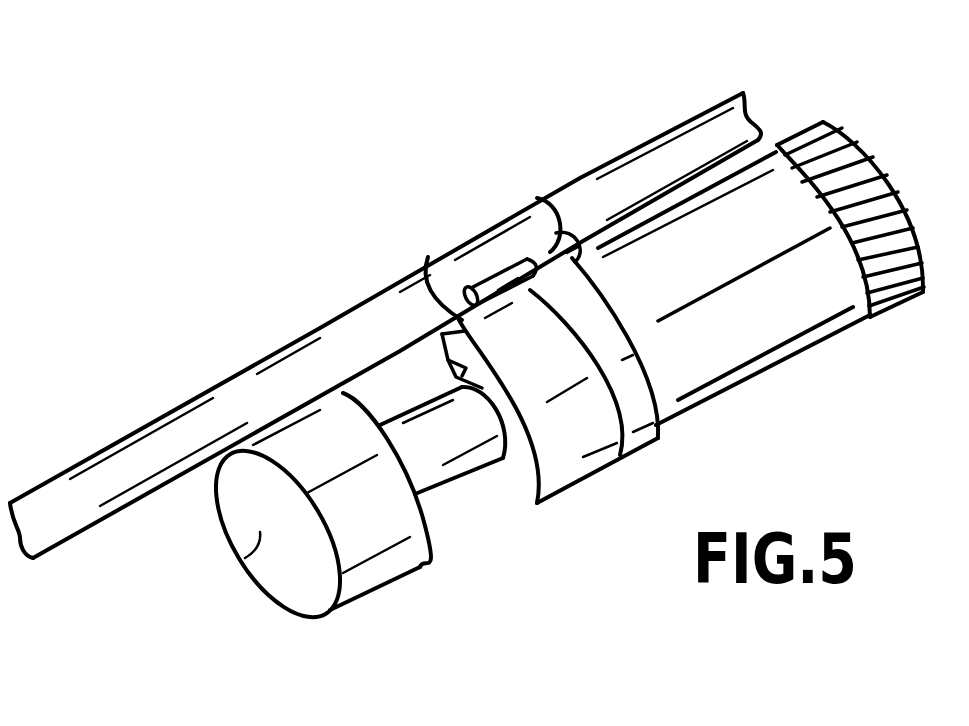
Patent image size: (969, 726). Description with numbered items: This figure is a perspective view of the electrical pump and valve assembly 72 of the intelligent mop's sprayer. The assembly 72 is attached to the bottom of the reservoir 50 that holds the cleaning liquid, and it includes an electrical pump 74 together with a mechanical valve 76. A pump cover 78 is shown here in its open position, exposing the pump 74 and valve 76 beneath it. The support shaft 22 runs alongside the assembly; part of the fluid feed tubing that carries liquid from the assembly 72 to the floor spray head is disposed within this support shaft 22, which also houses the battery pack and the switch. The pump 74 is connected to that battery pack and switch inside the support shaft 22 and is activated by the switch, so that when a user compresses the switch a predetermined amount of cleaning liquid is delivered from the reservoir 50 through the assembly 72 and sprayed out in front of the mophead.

The support shaft 22 is at (590, 175).
The reservoir 50 is at (792, 322).
The electrical pump and valve assembly 72 is at (471, 546).
The electrical pump 74 is at (483, 465).
The mechanical valve 76 is at (440, 350).
The pump cover 78 is at (245, 558).